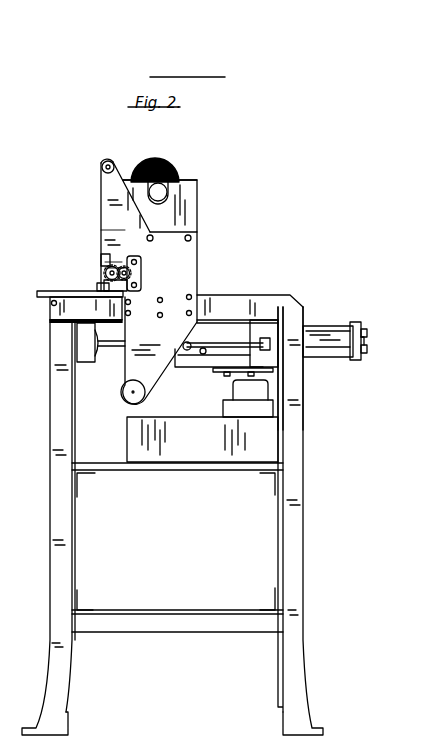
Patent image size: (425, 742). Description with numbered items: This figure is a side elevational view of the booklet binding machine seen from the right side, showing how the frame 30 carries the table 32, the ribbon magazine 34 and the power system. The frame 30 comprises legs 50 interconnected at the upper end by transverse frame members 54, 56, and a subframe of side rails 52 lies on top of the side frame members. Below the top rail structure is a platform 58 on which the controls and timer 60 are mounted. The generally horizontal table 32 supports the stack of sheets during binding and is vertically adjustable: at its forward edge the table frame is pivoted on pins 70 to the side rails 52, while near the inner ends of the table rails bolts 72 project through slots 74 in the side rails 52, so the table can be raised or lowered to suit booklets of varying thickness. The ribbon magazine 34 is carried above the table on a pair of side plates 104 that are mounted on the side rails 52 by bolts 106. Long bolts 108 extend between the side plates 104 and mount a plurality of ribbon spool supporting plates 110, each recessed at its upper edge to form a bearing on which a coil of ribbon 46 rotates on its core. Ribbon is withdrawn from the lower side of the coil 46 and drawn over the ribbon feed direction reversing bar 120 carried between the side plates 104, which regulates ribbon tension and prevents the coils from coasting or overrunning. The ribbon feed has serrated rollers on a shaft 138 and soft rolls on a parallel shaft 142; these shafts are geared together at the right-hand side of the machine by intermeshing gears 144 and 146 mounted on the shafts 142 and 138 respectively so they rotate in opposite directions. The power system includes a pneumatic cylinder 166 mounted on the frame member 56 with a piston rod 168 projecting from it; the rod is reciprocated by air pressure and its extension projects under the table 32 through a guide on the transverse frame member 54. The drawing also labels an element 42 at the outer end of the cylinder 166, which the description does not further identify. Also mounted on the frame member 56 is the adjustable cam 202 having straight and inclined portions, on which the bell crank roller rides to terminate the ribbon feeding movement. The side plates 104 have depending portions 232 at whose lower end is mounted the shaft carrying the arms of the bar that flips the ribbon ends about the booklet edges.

The frame 30 is at (47, 577).
The table 32 is at (45, 292).
The ribbon magazine 34 is at (203, 194).
The cylinder end cap 42 is at (352, 322).
The coil of ribbon 46 is at (171, 175).
The leg 50 is at (287, 651).
The side rail 52 is at (258, 294).
The transverse frame member 54 is at (82, 364).
The transverse frame member 56 is at (290, 372).
The platform 58 is at (117, 464).
The controls and timer 60 is at (262, 438).
The pin 70 is at (51, 304).
The bolt 72 is at (96, 305).
The slot 74 is at (100, 312).
The side plate 104 is at (100, 190).
The bolt 106 is at (191, 296).
The long bolt 108 is at (191, 240).
The ribbon spool supporting plate 110 is at (197, 215).
The ribbon feed direction reversing bar 120 is at (105, 163).
The shaft 138 is at (141, 275).
The shaft 142 is at (107, 278).
The gear 144 is at (104, 261).
The gear 146 is at (128, 258).
The pneumatic cylinder 166 is at (325, 330).
The piston rod 168 is at (250, 338).
The cam 202 is at (202, 366).
The depending portion 232 is at (128, 378).